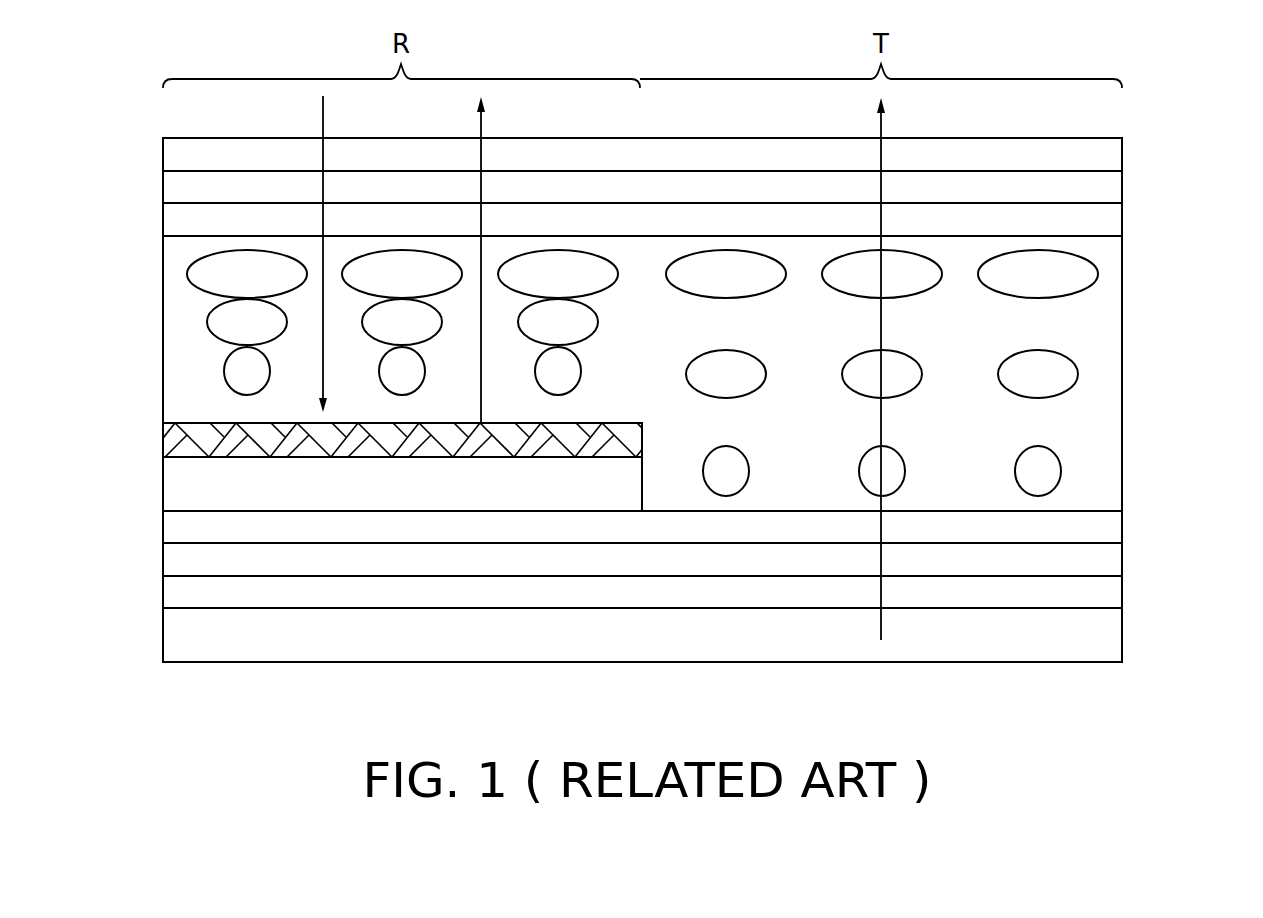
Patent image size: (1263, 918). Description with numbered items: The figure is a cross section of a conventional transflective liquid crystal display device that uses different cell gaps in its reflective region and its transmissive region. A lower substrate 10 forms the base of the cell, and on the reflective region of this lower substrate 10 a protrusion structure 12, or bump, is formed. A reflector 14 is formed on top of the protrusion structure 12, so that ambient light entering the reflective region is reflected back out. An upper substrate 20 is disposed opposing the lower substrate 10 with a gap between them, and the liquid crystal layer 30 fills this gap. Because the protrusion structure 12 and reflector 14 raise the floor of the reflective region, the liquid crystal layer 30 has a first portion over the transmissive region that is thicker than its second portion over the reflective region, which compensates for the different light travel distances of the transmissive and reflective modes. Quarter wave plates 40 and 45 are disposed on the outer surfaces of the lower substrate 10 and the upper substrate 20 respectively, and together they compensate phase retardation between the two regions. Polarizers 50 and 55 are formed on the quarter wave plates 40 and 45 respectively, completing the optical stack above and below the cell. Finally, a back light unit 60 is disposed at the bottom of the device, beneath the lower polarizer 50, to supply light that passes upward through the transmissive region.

The polarizer 55 is at (1100, 158).
The quarter wave plate 45 is at (1100, 190).
The upper substrate 20 is at (1100, 223).
The liquid crystal layer 30 is at (1100, 334).
The reflector 14 is at (183, 440).
The protrusion structure 12 is at (183, 488).
The lower substrate 10 is at (1102, 530).
The quarter wave plate 40 is at (1102, 562).
The polarizer 50 is at (1102, 594).
The back light unit 60 is at (1102, 637).